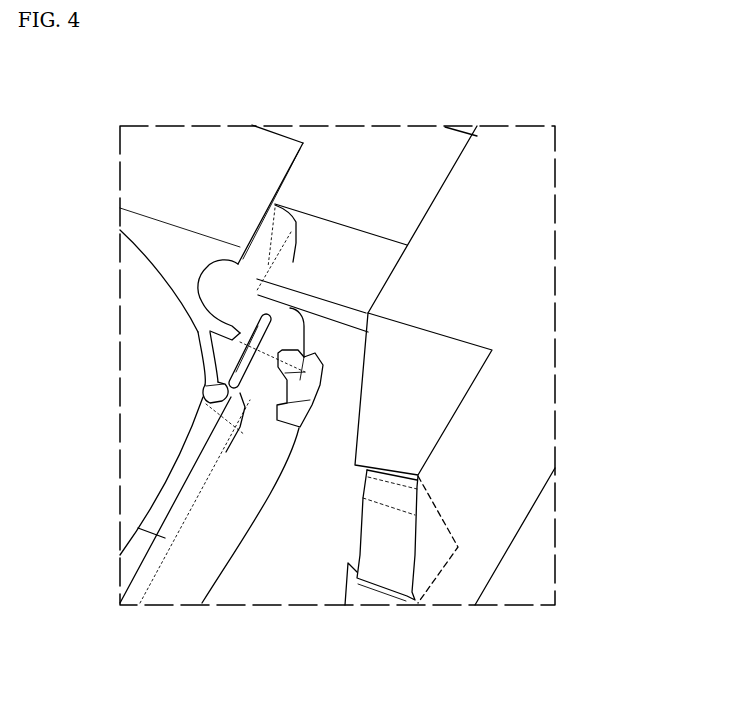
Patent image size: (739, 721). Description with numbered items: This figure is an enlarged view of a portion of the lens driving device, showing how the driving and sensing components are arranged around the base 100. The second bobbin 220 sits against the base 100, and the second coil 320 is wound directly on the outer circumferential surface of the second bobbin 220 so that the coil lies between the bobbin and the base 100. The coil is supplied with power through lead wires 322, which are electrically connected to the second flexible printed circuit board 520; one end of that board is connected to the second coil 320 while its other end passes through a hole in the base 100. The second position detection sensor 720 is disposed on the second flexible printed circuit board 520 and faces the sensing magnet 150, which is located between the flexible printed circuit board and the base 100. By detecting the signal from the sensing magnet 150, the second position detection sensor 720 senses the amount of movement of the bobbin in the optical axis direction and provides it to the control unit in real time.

The base 100 is at (490, 247).
The sensing magnet 150 is at (391, 532).
The second bobbin 220 is at (234, 165).
The second coil 320 is at (150, 347).
The lead wires 322 is at (205, 368).
The second flexible printed circuit board 520 is at (282, 333).
The second position detection sensor 720 is at (296, 407).